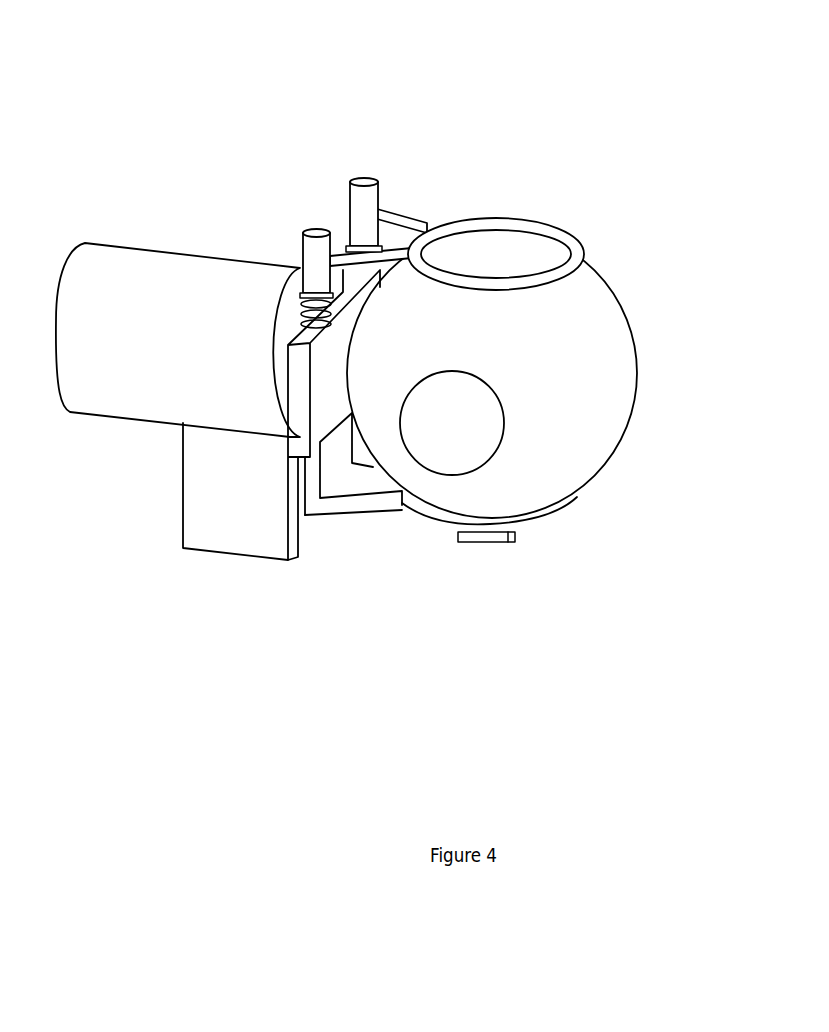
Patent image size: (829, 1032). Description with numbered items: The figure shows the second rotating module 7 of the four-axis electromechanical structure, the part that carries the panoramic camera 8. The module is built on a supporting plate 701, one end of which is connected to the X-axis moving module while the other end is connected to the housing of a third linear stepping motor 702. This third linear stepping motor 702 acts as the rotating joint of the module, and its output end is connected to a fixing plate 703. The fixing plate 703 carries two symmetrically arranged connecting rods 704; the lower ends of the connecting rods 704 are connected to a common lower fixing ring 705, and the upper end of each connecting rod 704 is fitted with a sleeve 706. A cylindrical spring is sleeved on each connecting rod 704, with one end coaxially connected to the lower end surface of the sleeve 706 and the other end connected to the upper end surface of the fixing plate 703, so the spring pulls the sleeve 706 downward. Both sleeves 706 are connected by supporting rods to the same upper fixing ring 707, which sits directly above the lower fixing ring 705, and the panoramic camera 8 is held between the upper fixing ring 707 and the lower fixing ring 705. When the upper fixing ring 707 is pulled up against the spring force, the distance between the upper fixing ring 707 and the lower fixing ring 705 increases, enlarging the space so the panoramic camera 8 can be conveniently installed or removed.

The second rotating module 7 is at (472, 161).
The panoramic camera 8 is at (550, 392).
The supporting plate 701 is at (207, 520).
The third linear stepping motor 702 is at (162, 310).
The fixing plate 703 is at (300, 437).
The connecting rod 704 is at (373, 500).
The lower fixing ring 705 is at (542, 520).
The sleeve 706 is at (315, 275).
The upper fixing ring 707 is at (572, 240).